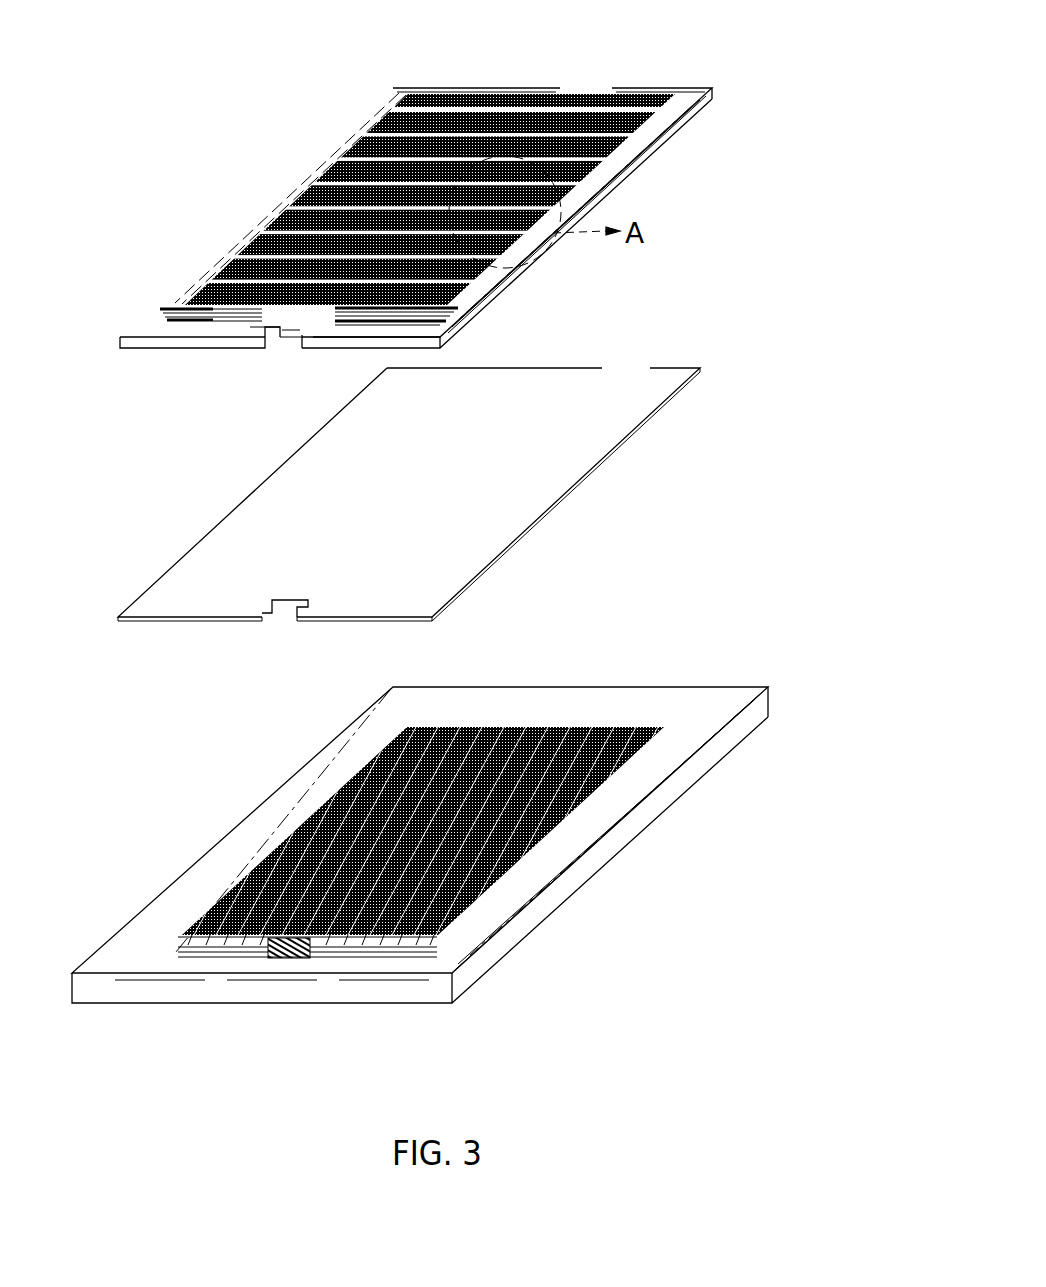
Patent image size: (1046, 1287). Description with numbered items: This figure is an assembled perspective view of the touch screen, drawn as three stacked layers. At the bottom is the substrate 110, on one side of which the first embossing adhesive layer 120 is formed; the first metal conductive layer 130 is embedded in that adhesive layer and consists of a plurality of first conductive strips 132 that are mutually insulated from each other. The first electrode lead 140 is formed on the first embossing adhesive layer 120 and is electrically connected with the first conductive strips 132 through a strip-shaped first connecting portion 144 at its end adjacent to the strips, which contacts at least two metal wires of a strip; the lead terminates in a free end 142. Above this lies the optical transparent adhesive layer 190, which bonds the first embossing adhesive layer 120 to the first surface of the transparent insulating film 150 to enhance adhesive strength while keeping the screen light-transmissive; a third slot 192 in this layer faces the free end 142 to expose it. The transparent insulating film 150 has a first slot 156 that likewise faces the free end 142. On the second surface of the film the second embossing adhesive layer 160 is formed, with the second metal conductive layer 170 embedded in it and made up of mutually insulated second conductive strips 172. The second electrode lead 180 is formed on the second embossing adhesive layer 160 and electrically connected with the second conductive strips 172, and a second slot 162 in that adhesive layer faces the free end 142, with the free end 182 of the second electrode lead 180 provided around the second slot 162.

The substrate 110 is at (568, 882).
The first embossing adhesive layer 120 is at (653, 775).
The first metal conductive layer 130 is at (567, 733).
The first conductive strips 132 is at (527, 813).
The first electrode lead 140 is at (458, 950).
The free end of the first electrode lead 142 is at (300, 960).
The first connecting portion 144 is at (212, 937).
The transparent insulating film 150 is at (553, 222).
The first slot 156 is at (293, 343).
The second embossing adhesive layer 160 is at (675, 118).
The second slot 162 is at (270, 328).
The second metal conductive layer 170 is at (567, 110).
The second conductive strips 172 is at (348, 162).
The second electrode lead 180 is at (256, 234).
The free end of the second electrode lead 182 is at (440, 330).
The optical transparent adhesive layer 190 is at (543, 478).
The third slot 192 is at (283, 616).